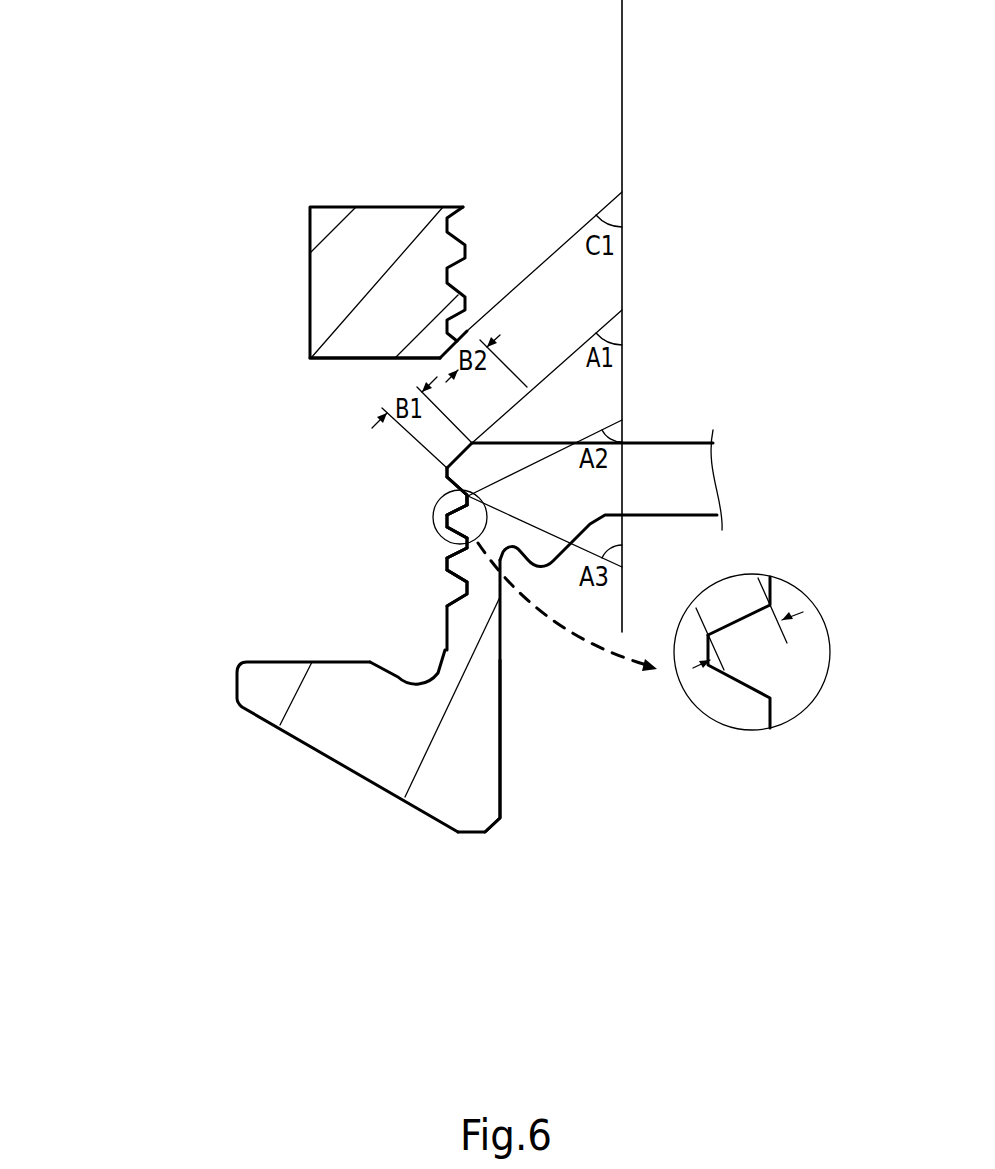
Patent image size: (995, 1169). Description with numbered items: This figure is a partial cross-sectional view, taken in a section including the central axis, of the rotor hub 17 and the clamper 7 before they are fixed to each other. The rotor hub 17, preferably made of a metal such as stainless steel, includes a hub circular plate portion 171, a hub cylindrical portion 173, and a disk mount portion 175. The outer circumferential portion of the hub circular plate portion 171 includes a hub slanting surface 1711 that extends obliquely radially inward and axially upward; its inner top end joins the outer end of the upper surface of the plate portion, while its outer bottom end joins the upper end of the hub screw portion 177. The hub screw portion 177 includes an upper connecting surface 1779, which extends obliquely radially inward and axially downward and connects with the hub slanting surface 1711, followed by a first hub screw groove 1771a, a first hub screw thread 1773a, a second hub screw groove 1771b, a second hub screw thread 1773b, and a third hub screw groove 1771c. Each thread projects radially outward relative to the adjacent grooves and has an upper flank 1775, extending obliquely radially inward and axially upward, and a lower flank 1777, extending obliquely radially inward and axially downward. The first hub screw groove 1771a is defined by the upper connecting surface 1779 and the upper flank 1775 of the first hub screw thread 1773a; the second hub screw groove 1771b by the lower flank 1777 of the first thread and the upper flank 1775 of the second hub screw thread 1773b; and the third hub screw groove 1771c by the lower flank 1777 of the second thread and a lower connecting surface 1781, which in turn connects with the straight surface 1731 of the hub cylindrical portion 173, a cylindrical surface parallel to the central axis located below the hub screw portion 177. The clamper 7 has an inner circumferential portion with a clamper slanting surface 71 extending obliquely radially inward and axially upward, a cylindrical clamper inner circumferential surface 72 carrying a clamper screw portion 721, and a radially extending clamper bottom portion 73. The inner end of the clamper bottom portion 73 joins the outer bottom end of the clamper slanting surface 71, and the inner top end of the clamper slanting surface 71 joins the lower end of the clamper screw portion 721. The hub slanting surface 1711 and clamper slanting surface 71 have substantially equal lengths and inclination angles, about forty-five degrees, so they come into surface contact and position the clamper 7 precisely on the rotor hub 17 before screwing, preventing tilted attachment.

The rotor hub 17 is at (723, 196).
The clamper 7 is at (353, 230).
The clamper slanting surface 71 is at (447, 340).
The clamper inner circumferential surface 72 is at (510, 224).
The clamper screw portion 721 is at (478, 245).
The clamper bottom portion 73 is at (353, 358).
The hub circular plate portion 171 is at (675, 467).
The hub slanting surface 1711 is at (580, 437).
The hub cylindrical portion 173 is at (483, 590).
The straight surface 1731 is at (447, 650).
The disk mount portion 175 is at (335, 716).
The hub screw portion 177 is at (158, 519).
The upper connecting surface 1779 is at (447, 476).
The first hub screw groove 1771a is at (428, 492).
The second hub screw groove 1771b is at (442, 545).
The third hub screw groove 1771c is at (440, 587).
The first hub screw thread 1773a is at (433, 520).
The second hub screw thread 1773b is at (437, 560).
The upper flank 1775 is at (740, 612).
The lower flank 1777 is at (738, 682).
The lower connecting surface 1781 is at (500, 660).